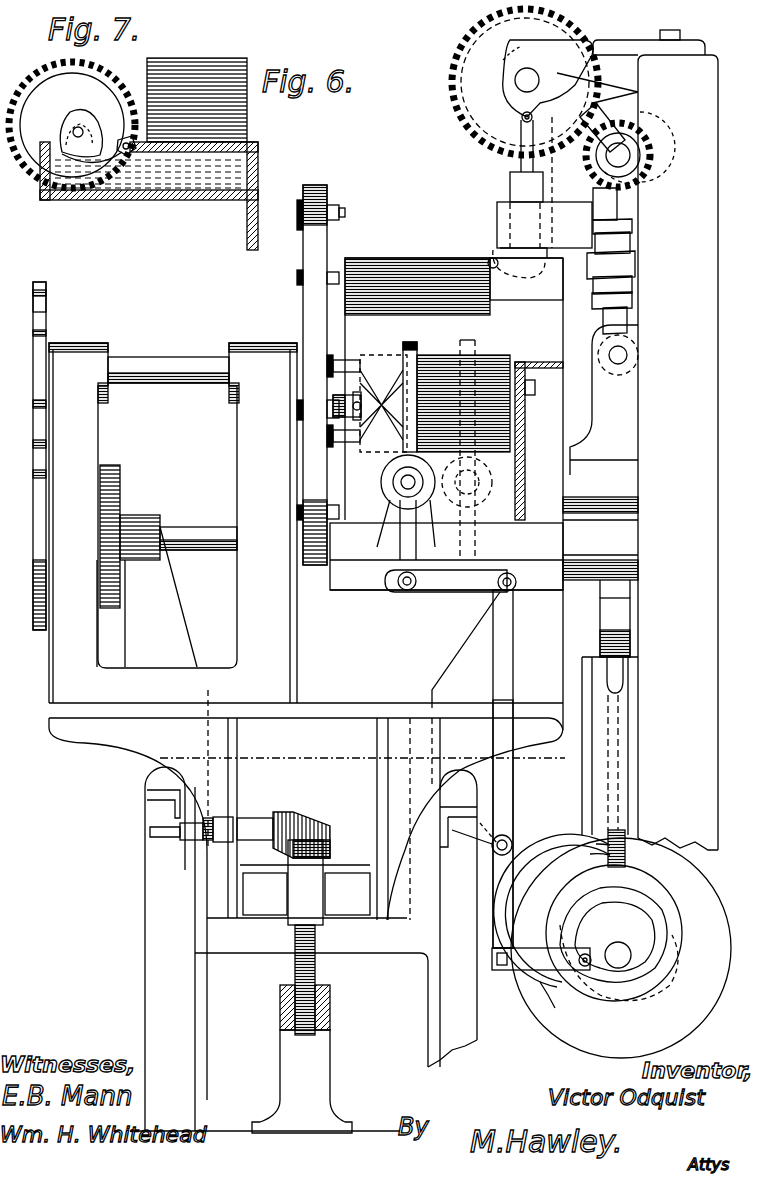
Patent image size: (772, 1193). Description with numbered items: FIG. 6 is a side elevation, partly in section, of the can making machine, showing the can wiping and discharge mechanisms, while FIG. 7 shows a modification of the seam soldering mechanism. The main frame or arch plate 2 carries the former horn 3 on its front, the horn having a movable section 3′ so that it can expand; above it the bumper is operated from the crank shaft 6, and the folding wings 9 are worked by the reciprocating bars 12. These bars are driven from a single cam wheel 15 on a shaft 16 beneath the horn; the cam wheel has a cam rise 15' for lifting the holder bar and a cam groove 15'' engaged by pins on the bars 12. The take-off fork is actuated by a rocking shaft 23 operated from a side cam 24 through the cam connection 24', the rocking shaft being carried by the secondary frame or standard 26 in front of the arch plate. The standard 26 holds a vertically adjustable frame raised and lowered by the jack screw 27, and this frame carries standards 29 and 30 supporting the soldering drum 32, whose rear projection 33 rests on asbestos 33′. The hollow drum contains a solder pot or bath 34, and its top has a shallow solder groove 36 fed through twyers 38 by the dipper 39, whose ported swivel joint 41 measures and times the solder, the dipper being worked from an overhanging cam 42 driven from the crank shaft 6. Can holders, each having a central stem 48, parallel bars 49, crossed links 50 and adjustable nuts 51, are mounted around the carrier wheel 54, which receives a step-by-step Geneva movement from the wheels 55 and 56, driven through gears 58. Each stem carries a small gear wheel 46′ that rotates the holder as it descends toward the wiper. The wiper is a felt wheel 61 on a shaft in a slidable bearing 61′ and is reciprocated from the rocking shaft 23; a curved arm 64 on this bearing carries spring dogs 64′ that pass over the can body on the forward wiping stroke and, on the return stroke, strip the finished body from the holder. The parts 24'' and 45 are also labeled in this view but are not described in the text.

In FIG. 6, the main frame or arch plate 2 is at (383, 475).
In FIG. 6, the former horn 3 is at (549, 458).
In FIG. 6, the movable section of the horn 3′ is at (604, 331).
In FIG. 6, the crank shaft 6 is at (630, 149).
In FIG. 6, the folding or forming wings 9 is at (615, 618).
In FIG. 6, the bars 12 is at (620, 810).
In FIG. 6, the cam wheel 15 is at (621, 948).
In FIG. 6, the cam rise 15' is at (552, 910).
In FIG. 6, the cam groove 15'' is at (626, 911).
In FIG. 6, the shaft 16 is at (619, 944).
In FIG. 6, the rocking shaft 23 is at (508, 838).
In FIG. 6, the side cam 24 is at (607, 913).
In FIG. 6, the cam connection 24' is at (541, 928).
In FIG. 6, the brake link 24'' is at (498, 854).
In FIG. 6, the secondary frame or standard 26 is at (175, 970).
In FIG. 6, the jack screw 27 is at (318, 968).
In FIG. 6, the standards 29 is at (173, 513).
In FIG. 6, the standard 30 is at (352, 692).
In FIG. 7, the soldering drum 32 is at (258, 188).
In FIG. 6, the soldering drum 32 is at (446, 424).
In FIG. 6, the projection 33 is at (526, 284).
In FIG. 6, the asbestos 33′ is at (515, 362).
In FIG. 7, the solder pot or bath 34 is at (195, 170).
In FIG. 7, the solder groove 36 is at (250, 142).
In FIG. 6, the solder groove 36 is at (430, 260).
In FIG. 7, the twyers 38 is at (126, 138).
In FIG. 7, the dipper 39 is at (60, 142).
In FIG. 6, the dipper 39 is at (500, 252).
In FIG. 6, the ported swivel or joint 41 is at (490, 262).
In FIG. 6, the overhanging cam 42 is at (478, 105).
In FIG. 6, the collar 45 is at (340, 420).
In FIG. 6, the small gear wheel 46′ is at (297, 216).
In FIG. 6, the central stem 48 is at (333, 436).
In FIG. 6, the parallel bars 49 is at (333, 365).
In FIG. 6, the crossed links 50 is at (385, 435).
In FIG. 6, the adjustable nuts 51 is at (362, 405).
In FIG. 6, the carrier wheel 54 is at (303, 262).
In FIG. 6, the wheel 55 is at (46, 308).
In FIG. 6, the wheel 56 is at (33, 540).
In FIG. 6, the gears 58 is at (115, 465).
In FIG. 6, the felt wheel wiper 61 is at (423, 507).
In FIG. 6, the slidable bearing 61′ is at (393, 535).
In FIG. 6, the curved arm 64 is at (412, 405).
In FIG. 6, the spring dogs 64′ is at (410, 342).